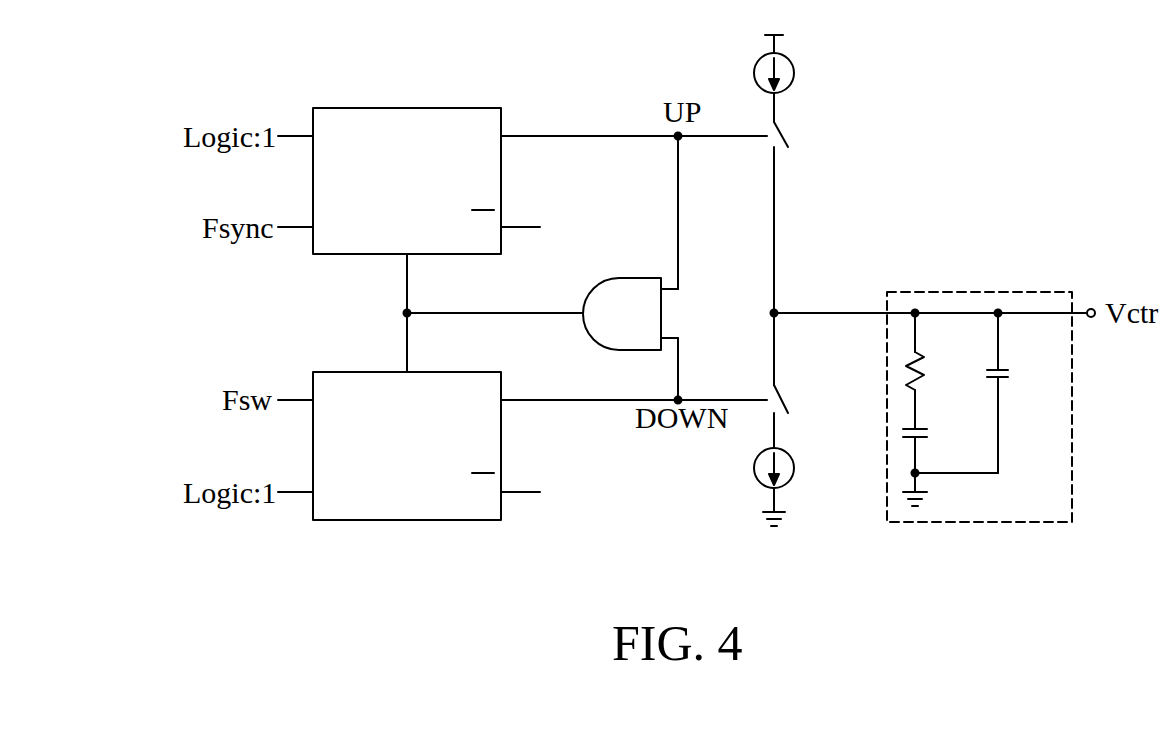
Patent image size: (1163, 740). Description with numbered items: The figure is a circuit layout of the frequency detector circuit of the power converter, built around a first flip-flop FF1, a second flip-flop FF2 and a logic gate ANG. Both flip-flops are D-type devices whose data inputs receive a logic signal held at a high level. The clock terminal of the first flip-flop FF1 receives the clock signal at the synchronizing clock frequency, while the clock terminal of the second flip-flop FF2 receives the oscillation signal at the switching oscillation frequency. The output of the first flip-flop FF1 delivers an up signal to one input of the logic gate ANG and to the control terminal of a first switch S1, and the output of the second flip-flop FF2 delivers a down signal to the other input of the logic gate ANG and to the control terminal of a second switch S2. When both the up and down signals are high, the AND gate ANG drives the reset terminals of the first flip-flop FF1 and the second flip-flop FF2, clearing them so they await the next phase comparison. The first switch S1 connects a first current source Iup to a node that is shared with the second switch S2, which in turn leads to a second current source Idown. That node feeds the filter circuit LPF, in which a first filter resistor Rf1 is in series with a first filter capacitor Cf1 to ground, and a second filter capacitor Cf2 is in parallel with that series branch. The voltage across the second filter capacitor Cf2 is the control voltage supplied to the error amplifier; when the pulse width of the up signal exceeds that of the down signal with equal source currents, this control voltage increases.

The first flip-flop FF1 is at (407, 108).
The second flip-flop FF2 is at (406, 520).
The logic gate ANG is at (633, 278).
The first switch S1 is at (800, 203).
The second switch S2 is at (800, 380).
The first current source Iup is at (798, 64).
The second current source Idown is at (816, 487).
The filter circuit LPF is at (979, 379).
The first filter resistor Rf1 is at (941, 371).
The first filter capacitor Cf1 is at (940, 444).
The second filter capacitor Cf2 is at (986, 393).